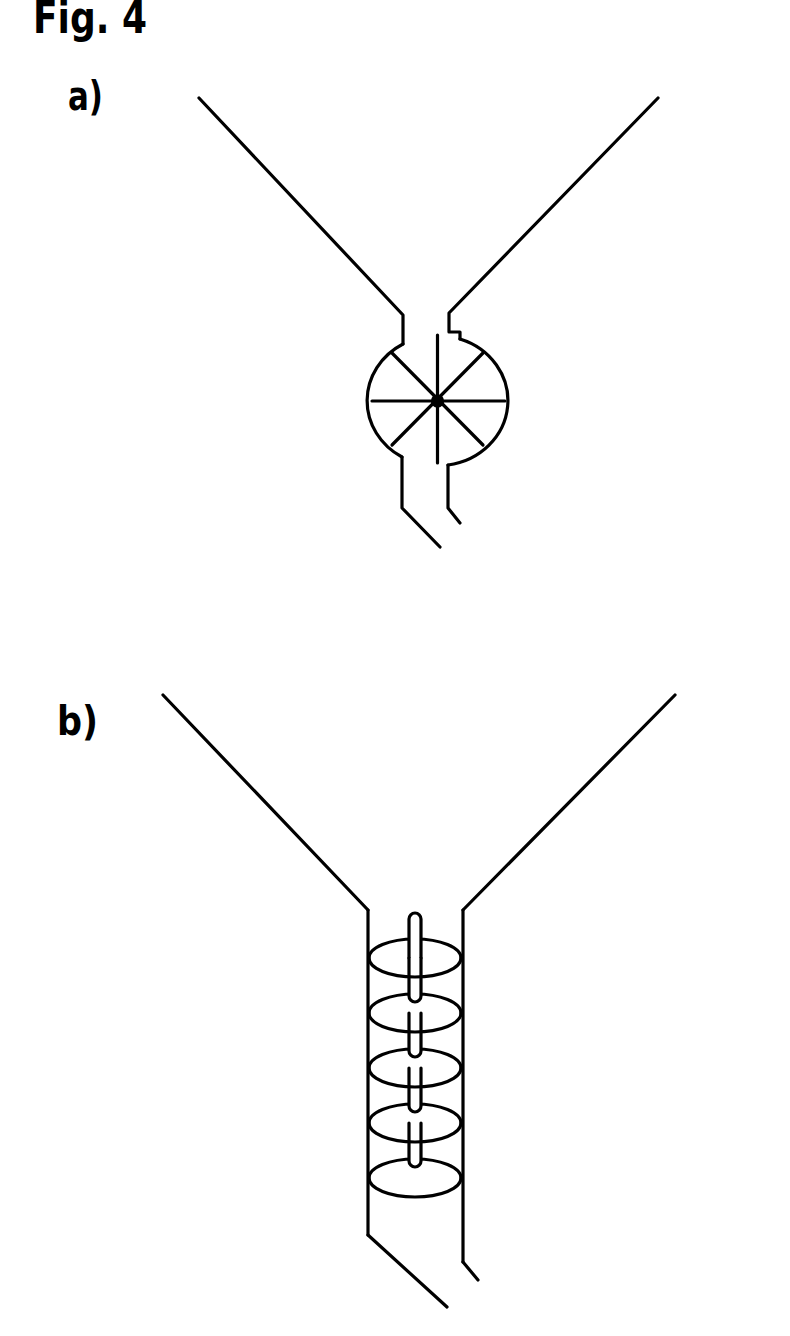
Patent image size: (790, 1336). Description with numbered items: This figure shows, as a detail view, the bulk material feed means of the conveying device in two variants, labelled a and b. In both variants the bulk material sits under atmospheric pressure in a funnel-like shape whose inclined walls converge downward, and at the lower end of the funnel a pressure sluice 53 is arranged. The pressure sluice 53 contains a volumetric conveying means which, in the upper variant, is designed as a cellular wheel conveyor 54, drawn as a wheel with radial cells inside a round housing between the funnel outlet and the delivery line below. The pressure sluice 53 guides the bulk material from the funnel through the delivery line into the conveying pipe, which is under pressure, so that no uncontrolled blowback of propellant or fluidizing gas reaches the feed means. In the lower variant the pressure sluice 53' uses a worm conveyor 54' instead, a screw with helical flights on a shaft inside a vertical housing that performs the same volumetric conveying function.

The pressure sluice 53 is at (458, 386).
The cellular wheel conveyor 54 is at (476, 399).
The pressure sluice 53' is at (367, 1086).
The worm conveyor 54' is at (457, 1055).